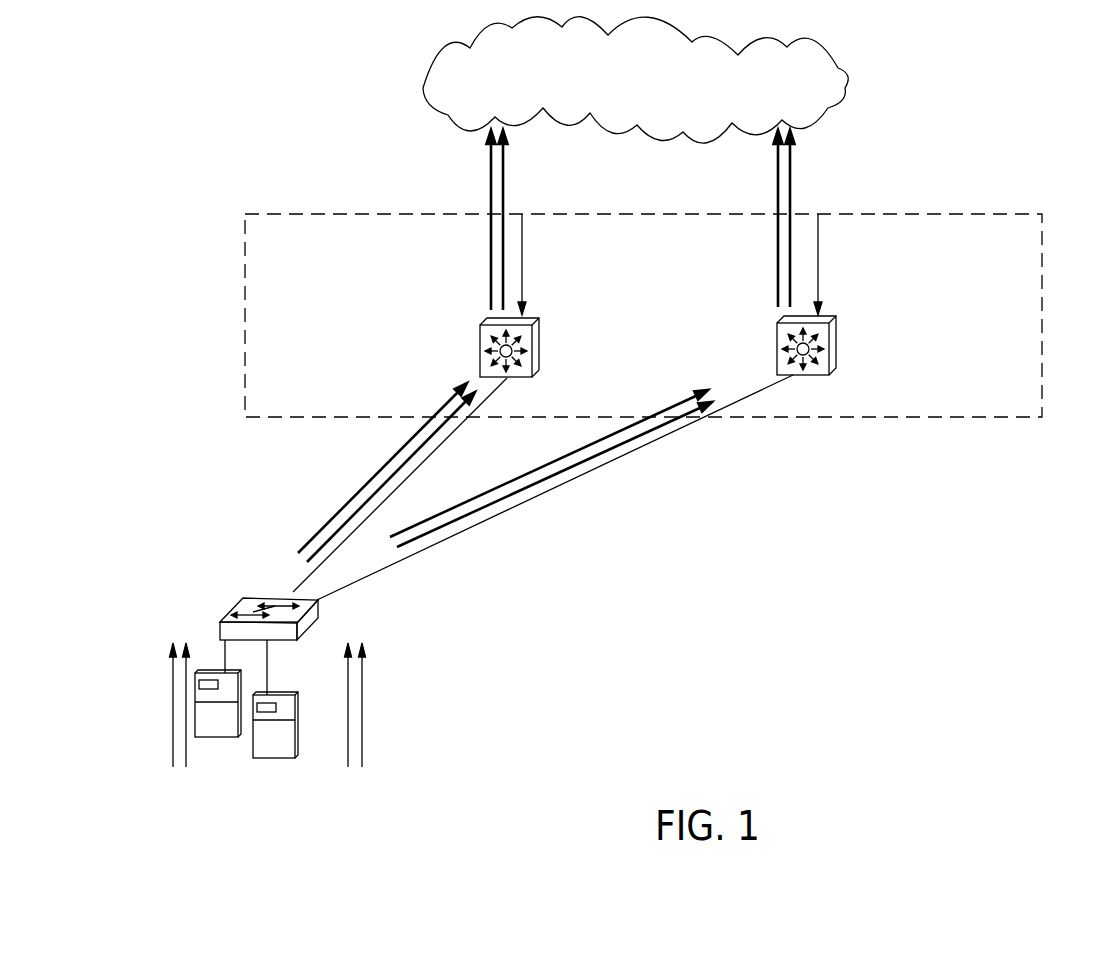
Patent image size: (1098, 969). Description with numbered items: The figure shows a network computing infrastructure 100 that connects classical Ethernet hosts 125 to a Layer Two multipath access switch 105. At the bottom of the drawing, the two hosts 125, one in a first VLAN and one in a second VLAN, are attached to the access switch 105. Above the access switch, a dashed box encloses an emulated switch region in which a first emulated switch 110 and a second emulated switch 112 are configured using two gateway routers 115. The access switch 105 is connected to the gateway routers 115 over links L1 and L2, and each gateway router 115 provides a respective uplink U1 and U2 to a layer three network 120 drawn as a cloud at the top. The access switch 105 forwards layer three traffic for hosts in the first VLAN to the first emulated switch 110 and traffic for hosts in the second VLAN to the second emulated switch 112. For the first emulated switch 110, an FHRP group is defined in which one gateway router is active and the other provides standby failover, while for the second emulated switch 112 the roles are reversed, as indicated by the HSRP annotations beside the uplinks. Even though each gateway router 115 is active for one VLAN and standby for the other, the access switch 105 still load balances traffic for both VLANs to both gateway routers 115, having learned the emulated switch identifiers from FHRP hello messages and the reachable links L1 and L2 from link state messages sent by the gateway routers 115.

The network computing infrastructure 100 is at (835, 610).
The L2MP access switch 105 is at (320, 628).
The first emulated switch (ES1) 110 is at (658, 338).
The second emulated switch (ES2) 112 is at (948, 417).
The gateway routers 115 is at (688, 366).
The layer 3 network 120 is at (843, 70).
The classical Ethernet hosts 125 is at (274, 732).
The link L1 is at (448, 433).
The link L2 is at (502, 512).
The uplink U1 is at (522, 230).
The uplink U2 is at (818, 228).